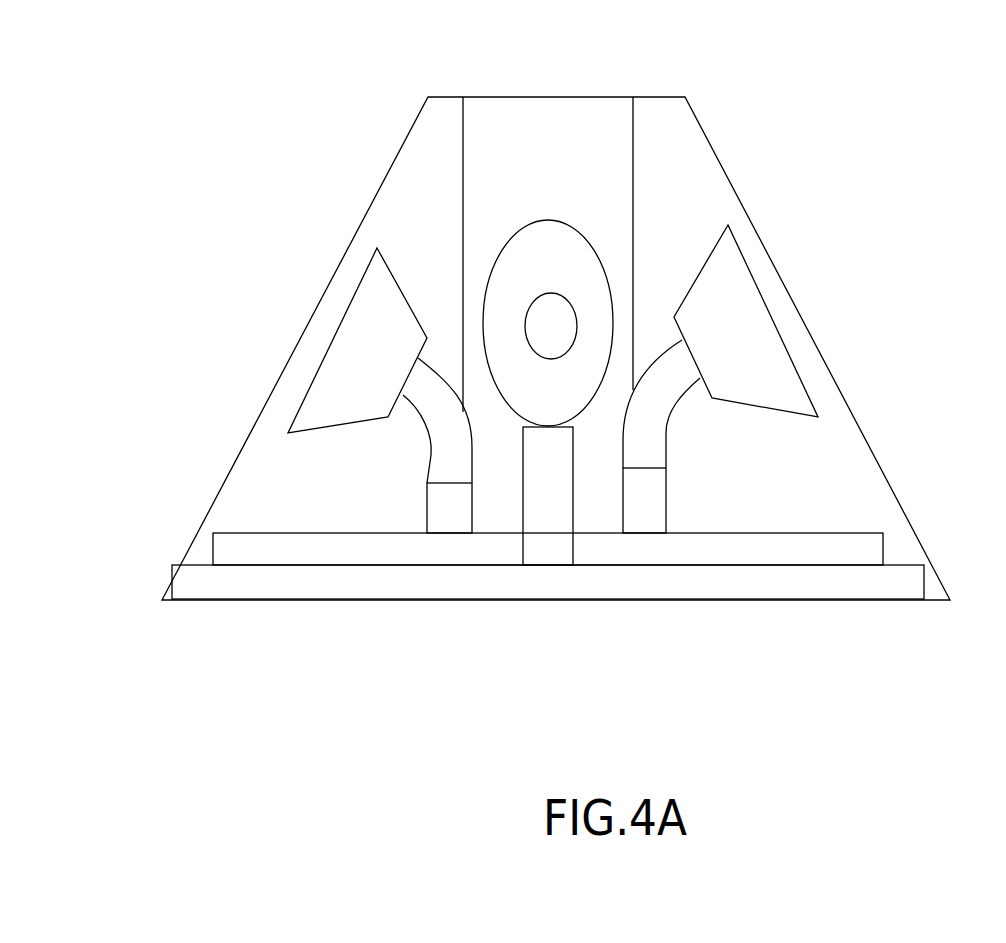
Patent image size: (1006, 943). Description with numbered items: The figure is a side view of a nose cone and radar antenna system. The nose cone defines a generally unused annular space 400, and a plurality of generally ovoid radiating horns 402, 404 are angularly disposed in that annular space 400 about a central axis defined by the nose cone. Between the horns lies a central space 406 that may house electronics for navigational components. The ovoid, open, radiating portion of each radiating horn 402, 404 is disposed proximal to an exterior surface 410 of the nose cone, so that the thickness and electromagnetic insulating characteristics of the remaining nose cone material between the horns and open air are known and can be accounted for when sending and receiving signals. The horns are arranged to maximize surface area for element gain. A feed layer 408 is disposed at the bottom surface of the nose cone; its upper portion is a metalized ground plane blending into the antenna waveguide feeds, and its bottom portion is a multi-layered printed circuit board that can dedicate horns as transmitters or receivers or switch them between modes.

The annular space 400 is at (412, 177).
The radiating horn 402 is at (347, 348).
The radiating horn 404 is at (762, 348).
The central space 406 is at (538, 128).
The feed layer 408 is at (752, 588).
The exterior surface 410 is at (884, 467).